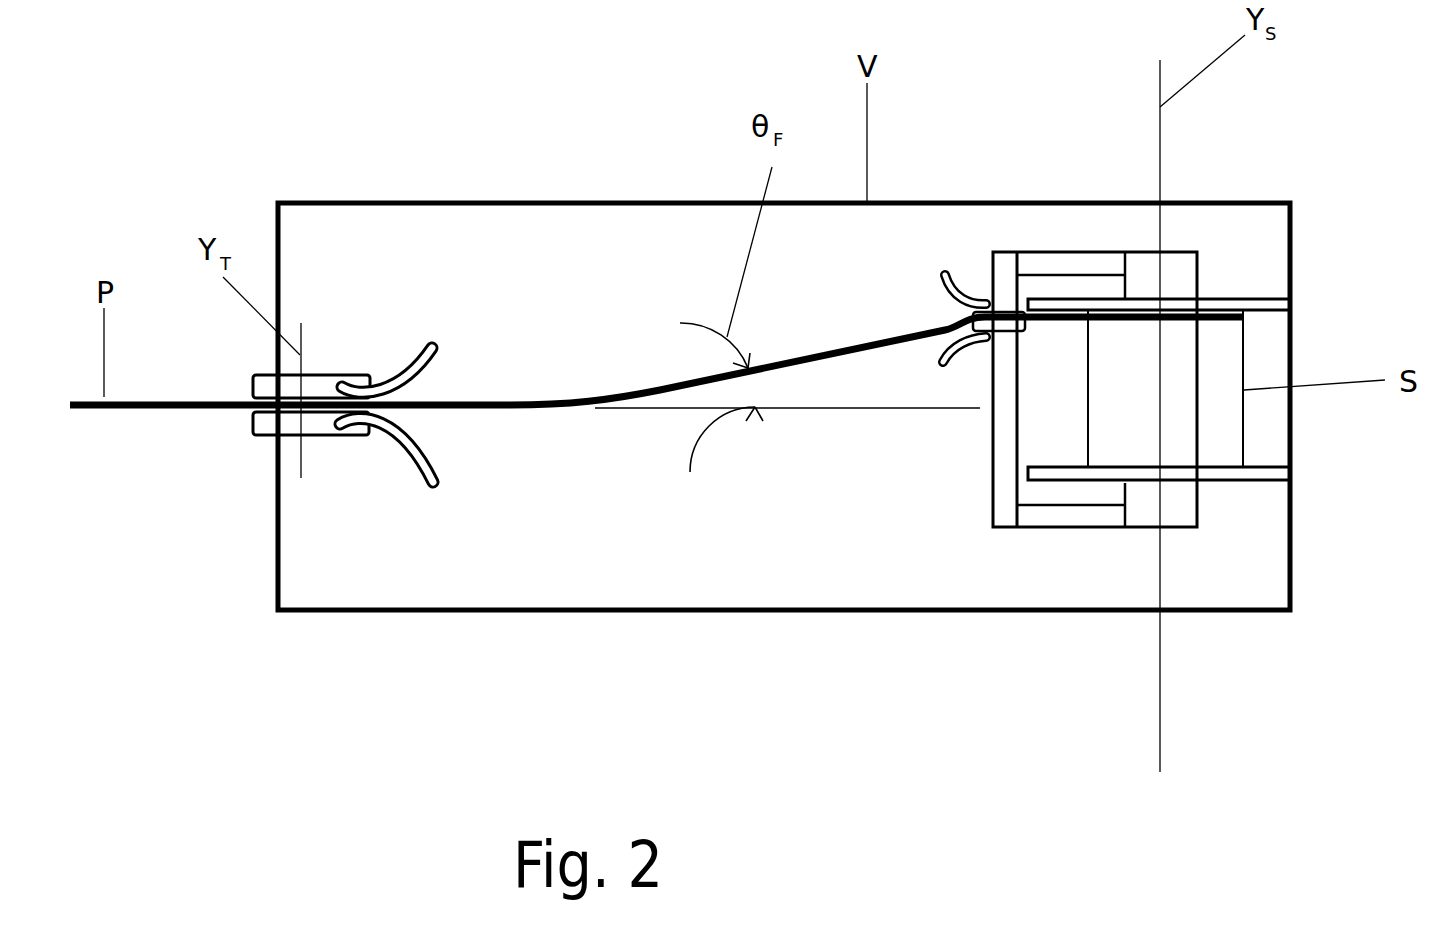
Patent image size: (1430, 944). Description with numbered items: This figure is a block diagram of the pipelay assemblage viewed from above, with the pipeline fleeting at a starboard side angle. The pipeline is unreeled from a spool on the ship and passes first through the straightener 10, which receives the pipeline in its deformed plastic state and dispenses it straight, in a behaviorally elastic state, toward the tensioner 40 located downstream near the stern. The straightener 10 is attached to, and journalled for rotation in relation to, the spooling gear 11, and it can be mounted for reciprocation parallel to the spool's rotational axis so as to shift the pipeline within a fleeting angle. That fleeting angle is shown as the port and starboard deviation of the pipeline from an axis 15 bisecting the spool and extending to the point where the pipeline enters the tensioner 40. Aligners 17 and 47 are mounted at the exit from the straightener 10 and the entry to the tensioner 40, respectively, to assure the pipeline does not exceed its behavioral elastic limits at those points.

The straightener 10 is at (995, 317).
The spooling gear 11 is at (1148, 515).
The axis 15 is at (820, 410).
The aligner 17 is at (958, 290).
The tensioner 40 is at (252, 430).
The aligner 47 is at (407, 360).